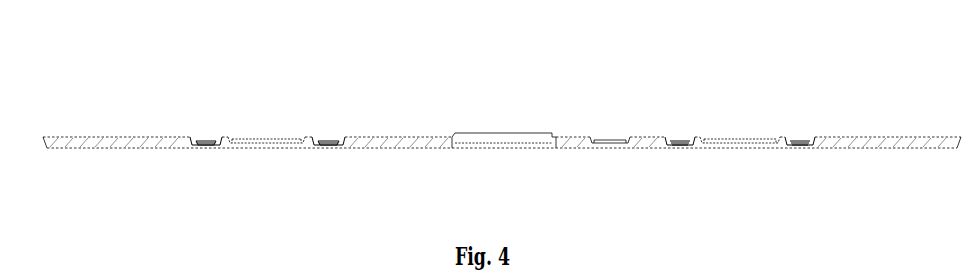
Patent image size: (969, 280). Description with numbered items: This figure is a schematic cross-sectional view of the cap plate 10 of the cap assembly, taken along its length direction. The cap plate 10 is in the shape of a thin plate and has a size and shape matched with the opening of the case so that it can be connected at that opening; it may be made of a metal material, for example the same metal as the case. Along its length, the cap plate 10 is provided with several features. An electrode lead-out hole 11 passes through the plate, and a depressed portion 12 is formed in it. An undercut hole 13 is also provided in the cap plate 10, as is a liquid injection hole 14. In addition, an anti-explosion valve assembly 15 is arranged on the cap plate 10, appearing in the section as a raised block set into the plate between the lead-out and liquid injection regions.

The cap plate 10 is at (741, 74).
The electrode lead-out hole 11 is at (259, 137).
The depressed portion 12 is at (218, 137).
The undercut hole 13 is at (331, 137).
The liquid injection hole 14 is at (614, 137).
The anti-explosion valve assembly 15 is at (508, 134).